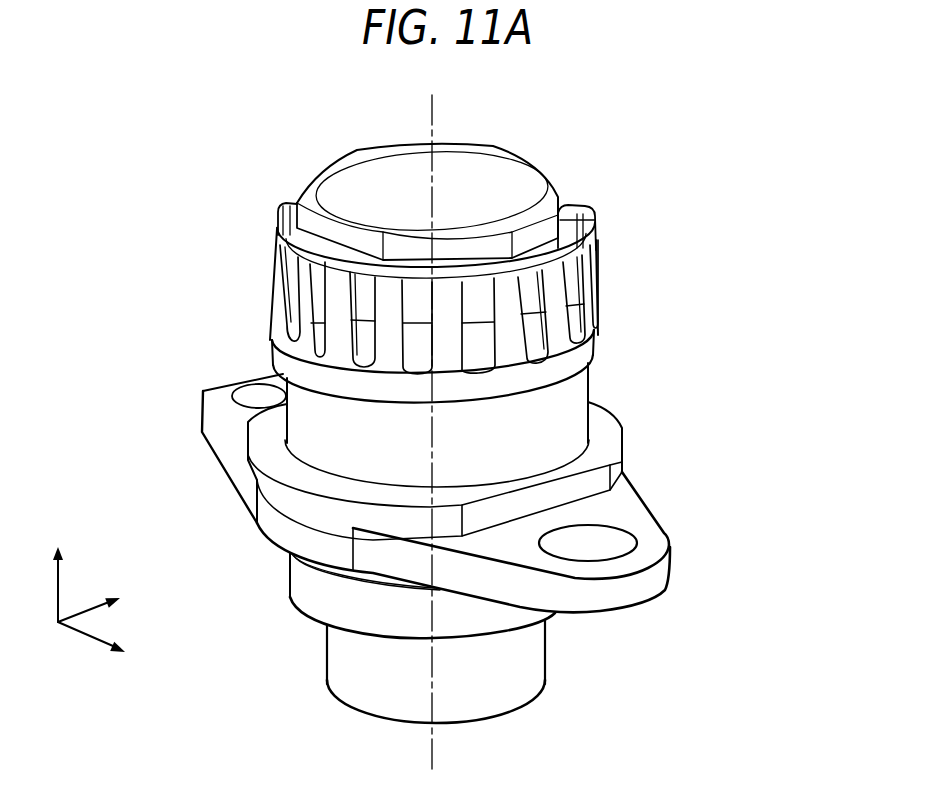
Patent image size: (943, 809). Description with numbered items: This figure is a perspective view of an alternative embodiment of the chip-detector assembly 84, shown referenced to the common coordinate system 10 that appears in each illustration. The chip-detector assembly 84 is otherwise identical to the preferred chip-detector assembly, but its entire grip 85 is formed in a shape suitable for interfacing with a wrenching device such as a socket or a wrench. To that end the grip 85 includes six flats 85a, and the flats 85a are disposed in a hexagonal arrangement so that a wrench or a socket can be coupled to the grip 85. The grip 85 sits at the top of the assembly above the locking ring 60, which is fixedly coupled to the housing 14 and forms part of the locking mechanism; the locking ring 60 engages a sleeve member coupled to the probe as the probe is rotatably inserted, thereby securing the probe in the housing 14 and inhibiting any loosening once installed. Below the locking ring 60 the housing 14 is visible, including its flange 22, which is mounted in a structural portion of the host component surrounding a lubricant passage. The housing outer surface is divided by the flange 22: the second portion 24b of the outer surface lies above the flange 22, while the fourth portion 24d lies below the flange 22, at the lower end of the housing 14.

The coordinate system 10 is at (83, 635).
The housing 14 is at (663, 427).
The flange 22 is at (687, 545).
The second portion of outer surface 24b is at (407, 448).
The fourth portion of outer surface 24d is at (405, 678).
The locking ring 60 is at (632, 300).
The chip-detector assembly 84 is at (247, 150).
The grip 85 is at (536, 134).
The flats 85a is at (323, 228).